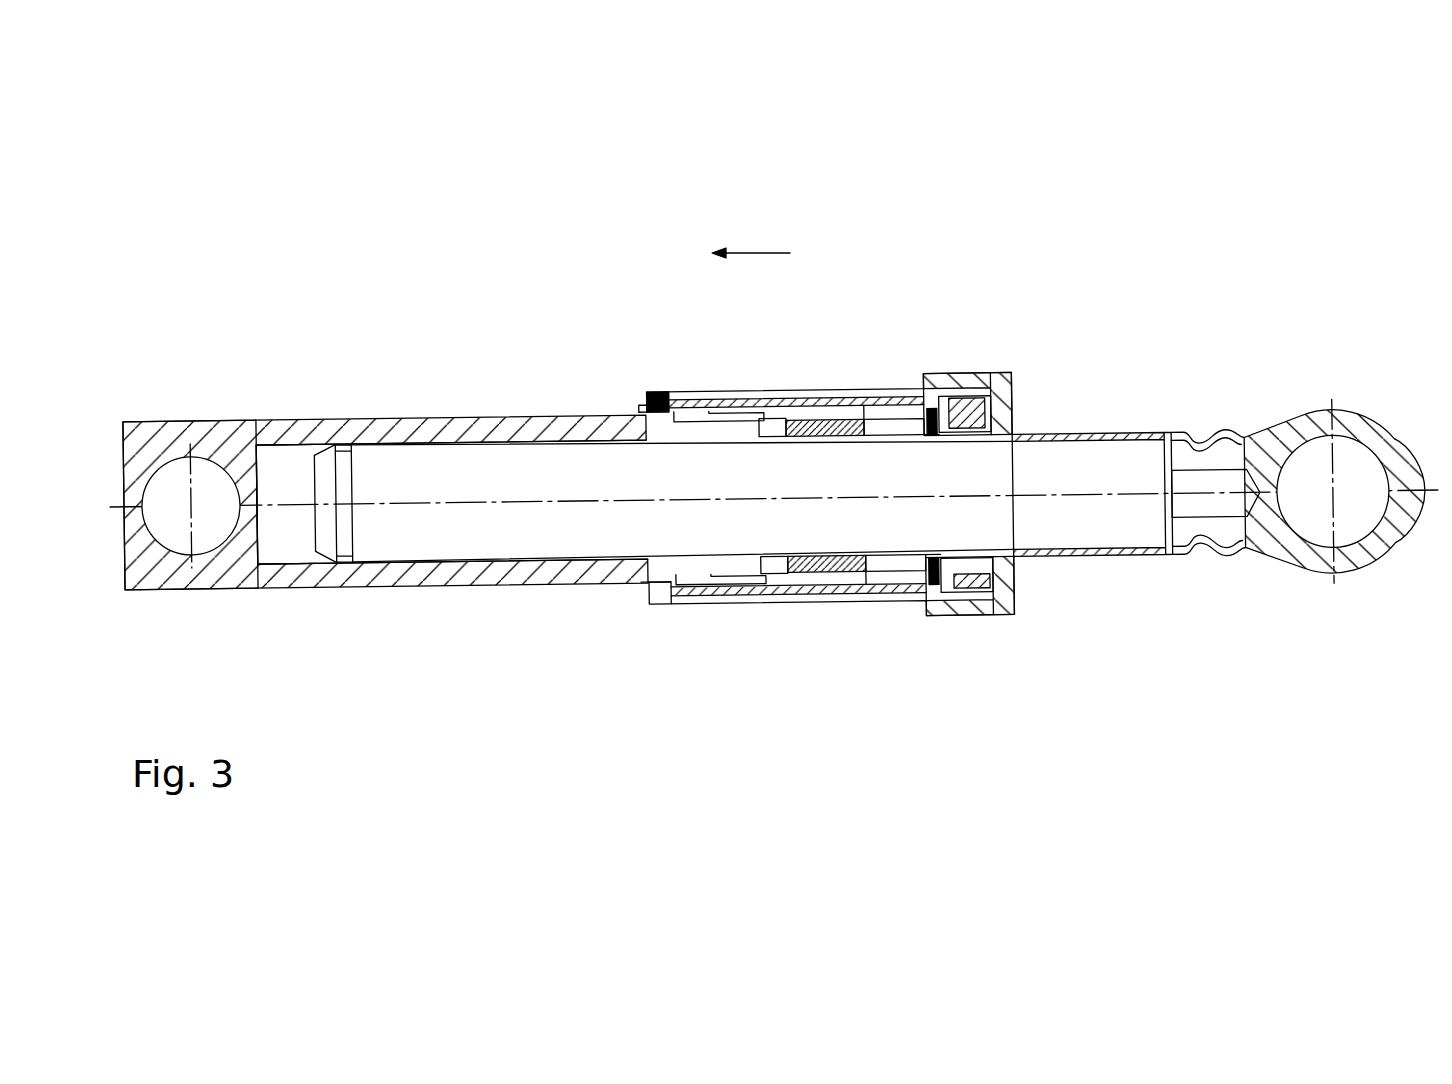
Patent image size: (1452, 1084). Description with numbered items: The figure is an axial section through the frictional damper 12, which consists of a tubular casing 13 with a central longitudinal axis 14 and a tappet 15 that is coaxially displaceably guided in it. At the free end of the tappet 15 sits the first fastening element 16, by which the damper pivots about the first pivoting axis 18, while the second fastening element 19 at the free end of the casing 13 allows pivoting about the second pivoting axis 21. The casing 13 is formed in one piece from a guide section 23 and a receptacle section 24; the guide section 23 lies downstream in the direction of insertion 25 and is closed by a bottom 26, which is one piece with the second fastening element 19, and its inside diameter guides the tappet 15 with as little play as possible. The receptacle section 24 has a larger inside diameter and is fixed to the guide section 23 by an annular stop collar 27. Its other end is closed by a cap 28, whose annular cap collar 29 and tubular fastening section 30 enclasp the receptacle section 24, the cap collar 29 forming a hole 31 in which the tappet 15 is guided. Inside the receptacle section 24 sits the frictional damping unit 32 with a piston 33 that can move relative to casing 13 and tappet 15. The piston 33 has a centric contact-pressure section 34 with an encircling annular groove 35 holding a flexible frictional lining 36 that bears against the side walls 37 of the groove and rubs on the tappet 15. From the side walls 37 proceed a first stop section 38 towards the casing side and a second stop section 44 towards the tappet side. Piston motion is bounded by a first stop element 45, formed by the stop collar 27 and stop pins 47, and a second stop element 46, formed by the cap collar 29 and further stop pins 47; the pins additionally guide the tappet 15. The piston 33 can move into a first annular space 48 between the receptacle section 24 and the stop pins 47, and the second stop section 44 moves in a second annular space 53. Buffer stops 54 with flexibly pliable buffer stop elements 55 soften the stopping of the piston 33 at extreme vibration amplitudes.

The frictional damper 12 is at (490, 343).
The tubular casing 13 is at (364, 410).
The central longitudinal axis 14 is at (270, 505).
The tappet 15 is at (1205, 438).
The first fastening element 16 is at (1420, 430).
The first pivoting axis 18 is at (1340, 485).
The second fastening element 19 is at (172, 433).
The second pivoting axis 21 is at (191, 507).
The guide section 23 is at (450, 418).
The receptacle section 24 is at (722, 396).
The direction of insertion 25 is at (750, 253).
The bottom 26 is at (283, 440).
The annular stop collar 27 is at (645, 405).
The cap 28 is at (968, 368).
The annular cap collar 29 is at (1013, 575).
The tubular fastening section 30 is at (988, 418).
The hole 31 is at (1160, 426).
The frictional damping unit 32 is at (812, 370).
The piston 33 is at (760, 572).
The contact-pressure section 34 is at (777, 602).
The annular groove 35 is at (795, 424).
The frictional lining 36 is at (845, 418).
The side walls 37 is at (870, 400).
The first stop section 38 is at (740, 588).
The second stop section 44 is at (800, 578).
The first stop element 45 is at (666, 591).
The second stop element 46 is at (1000, 398).
The stop pins 47 is at (665, 410).
The first annular space 48 is at (680, 396).
The second annular space 53 is at (975, 592).
The buffer stops 54 is at (920, 594).
The buffer stop elements 55 is at (935, 582).